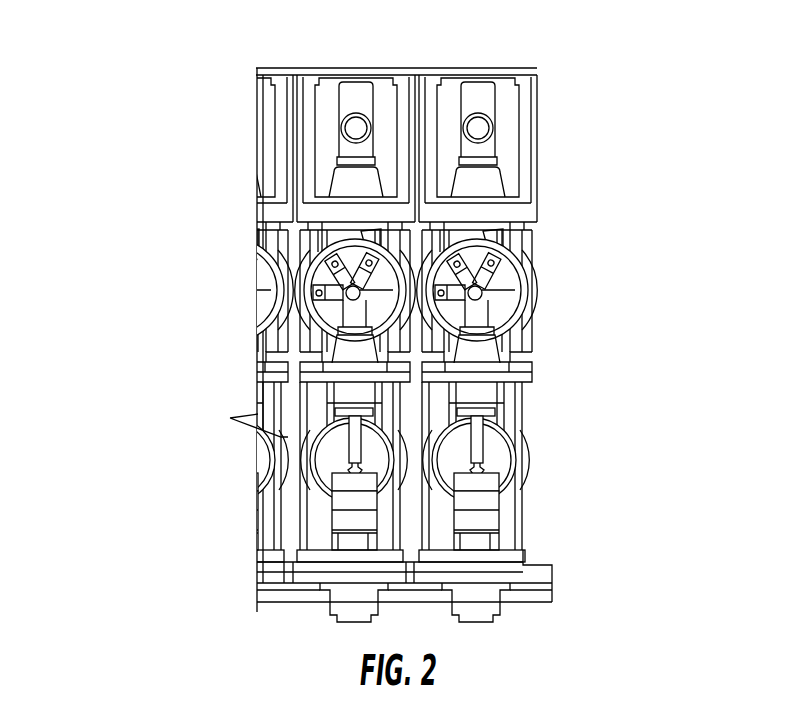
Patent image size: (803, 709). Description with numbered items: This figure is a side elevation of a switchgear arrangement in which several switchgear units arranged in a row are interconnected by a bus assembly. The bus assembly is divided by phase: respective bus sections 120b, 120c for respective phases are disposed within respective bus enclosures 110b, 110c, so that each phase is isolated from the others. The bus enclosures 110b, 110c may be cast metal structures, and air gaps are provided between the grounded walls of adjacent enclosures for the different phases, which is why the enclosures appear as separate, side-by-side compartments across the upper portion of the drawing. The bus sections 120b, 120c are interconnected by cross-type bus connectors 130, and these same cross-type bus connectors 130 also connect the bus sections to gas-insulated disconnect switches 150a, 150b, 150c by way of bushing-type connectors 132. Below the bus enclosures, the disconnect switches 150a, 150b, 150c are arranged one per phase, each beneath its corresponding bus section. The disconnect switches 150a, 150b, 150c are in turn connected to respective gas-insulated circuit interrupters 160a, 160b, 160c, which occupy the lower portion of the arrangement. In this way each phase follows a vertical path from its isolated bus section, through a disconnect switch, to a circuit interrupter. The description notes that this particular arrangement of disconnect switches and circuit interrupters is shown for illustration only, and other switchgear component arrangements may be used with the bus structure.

The bus enclosure 110b is at (348, 115).
The bus enclosure 110c is at (559, 120).
The bus section 120b is at (355, 115).
The bus section 120c is at (487, 120).
The cross-type bus connector 130 is at (487, 149).
The bushing-type connector 132 is at (492, 188).
The gas-insulated disconnect switch 150a is at (265, 298).
The gas-insulated disconnect switch 150b is at (323, 274).
The gas-insulated disconnect switch 150c is at (500, 293).
The gas-insulated circuit interrupter 160a is at (265, 467).
The gas-insulated circuit interrupter 160b is at (337, 443).
The gas-insulated circuit interrupter 160c is at (497, 455).